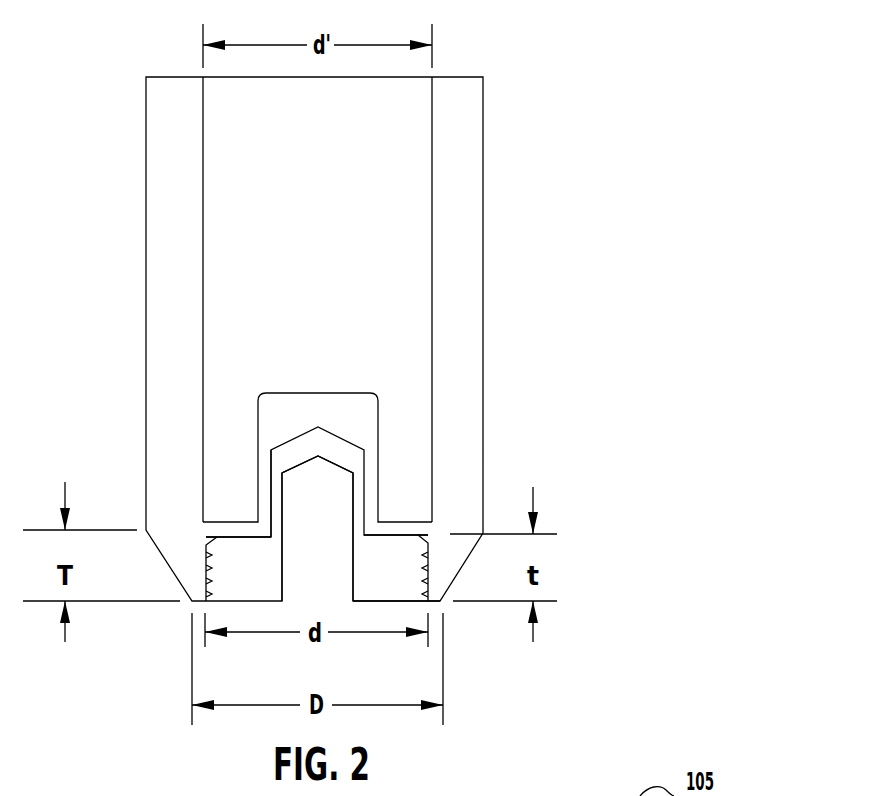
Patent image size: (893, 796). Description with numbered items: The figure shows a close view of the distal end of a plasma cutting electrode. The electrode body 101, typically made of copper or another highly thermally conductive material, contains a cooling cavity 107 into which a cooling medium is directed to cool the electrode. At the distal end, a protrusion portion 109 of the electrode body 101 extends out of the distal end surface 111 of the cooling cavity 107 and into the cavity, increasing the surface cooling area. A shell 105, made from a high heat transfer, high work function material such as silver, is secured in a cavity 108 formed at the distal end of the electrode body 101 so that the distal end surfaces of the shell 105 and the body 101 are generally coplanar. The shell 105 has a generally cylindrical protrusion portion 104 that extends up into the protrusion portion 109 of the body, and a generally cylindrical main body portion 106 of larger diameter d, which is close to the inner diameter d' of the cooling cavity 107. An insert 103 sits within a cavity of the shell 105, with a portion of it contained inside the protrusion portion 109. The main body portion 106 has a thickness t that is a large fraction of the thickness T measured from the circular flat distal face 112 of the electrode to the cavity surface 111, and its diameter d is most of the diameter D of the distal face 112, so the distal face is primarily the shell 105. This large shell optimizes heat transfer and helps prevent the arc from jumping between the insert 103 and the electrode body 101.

The electrode body 101 is at (455, 353).
The insert 103 is at (333, 488).
The protrusion portion 104 is at (350, 458).
The shell insert 105 is at (395, 595).
The main body portion 106 is at (234, 536).
The cooling cavity 107 is at (376, 160).
The cavity 108 is at (270, 468).
The protrusion portion 109 is at (327, 392).
The distal end surface 111 is at (400, 528).
The distal face 112 is at (436, 603).